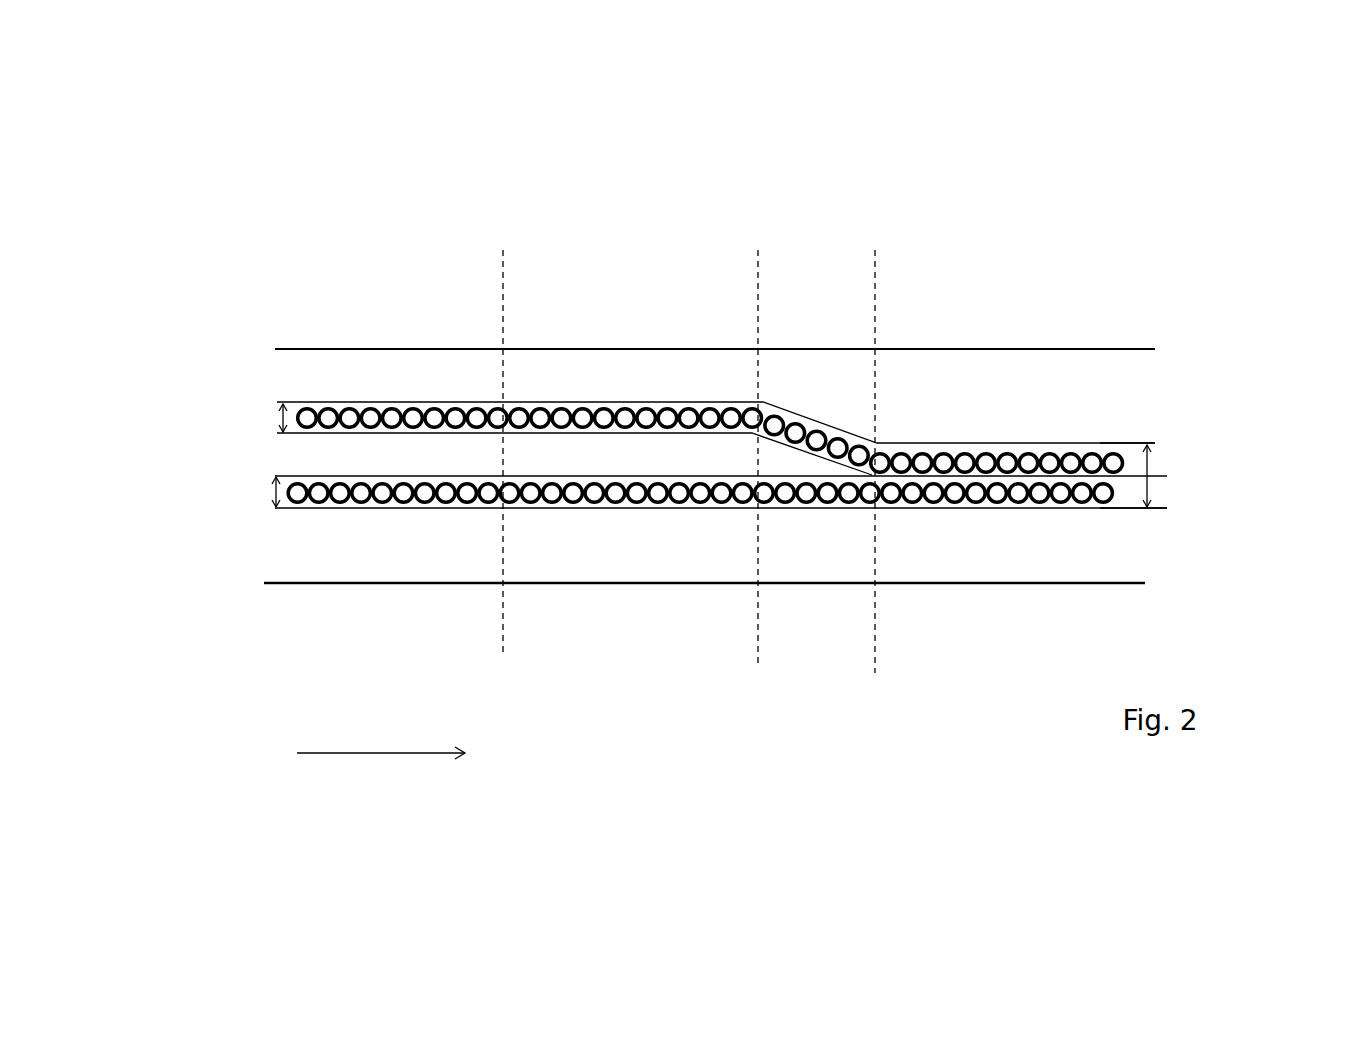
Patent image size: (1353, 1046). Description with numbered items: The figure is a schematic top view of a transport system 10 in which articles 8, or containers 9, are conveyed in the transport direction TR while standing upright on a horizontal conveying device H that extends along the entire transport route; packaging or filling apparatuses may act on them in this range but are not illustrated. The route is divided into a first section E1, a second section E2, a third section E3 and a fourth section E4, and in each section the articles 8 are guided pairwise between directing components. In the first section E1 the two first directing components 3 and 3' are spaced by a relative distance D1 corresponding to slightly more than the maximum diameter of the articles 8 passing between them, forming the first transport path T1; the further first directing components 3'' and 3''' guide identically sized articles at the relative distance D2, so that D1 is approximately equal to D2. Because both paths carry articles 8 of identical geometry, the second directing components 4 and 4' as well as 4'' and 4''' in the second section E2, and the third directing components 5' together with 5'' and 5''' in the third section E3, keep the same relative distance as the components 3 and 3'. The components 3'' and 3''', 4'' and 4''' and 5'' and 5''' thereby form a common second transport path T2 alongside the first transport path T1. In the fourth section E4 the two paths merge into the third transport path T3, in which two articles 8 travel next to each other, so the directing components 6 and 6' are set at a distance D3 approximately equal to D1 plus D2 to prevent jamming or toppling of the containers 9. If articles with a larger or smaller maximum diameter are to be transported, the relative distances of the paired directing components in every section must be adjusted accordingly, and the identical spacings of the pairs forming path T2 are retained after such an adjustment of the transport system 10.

The first directing component 3 is at (402, 319).
The first directing component 3' is at (430, 332).
The further first directing component 3'' is at (357, 386).
The further first directing component 3''' is at (392, 592).
The second directing component 4 is at (636, 319).
The second directing component 4' is at (643, 307).
The second directing component 4'' is at (549, 586).
The second directing component 4''' is at (626, 592).
The third directing component 5' is at (818, 342).
The third directing component 5'' is at (795, 586).
The third directing component 5''' is at (817, 592).
The directing component 6 is at (997, 363).
The directing component 6' is at (997, 593).
The article 8 is at (726, 359).
The container 9 is at (1092, 453).
The transport system 10 is at (724, 758).
The horizontal conveying device H is at (950, 376).
The relative distance D1 is at (283, 404).
The relative distance D2 is at (272, 511).
The relative distance D3 is at (1163, 476).
The first transport path T1 is at (228, 421).
The second transport path T2 is at (203, 499).
The third transport path T3 is at (1220, 472).
The first section E1 is at (437, 401).
The second section E2 is at (691, 405).
The third section E3 is at (840, 410).
The fourth section E4 is at (1082, 252).
The transport direction TR is at (381, 771).